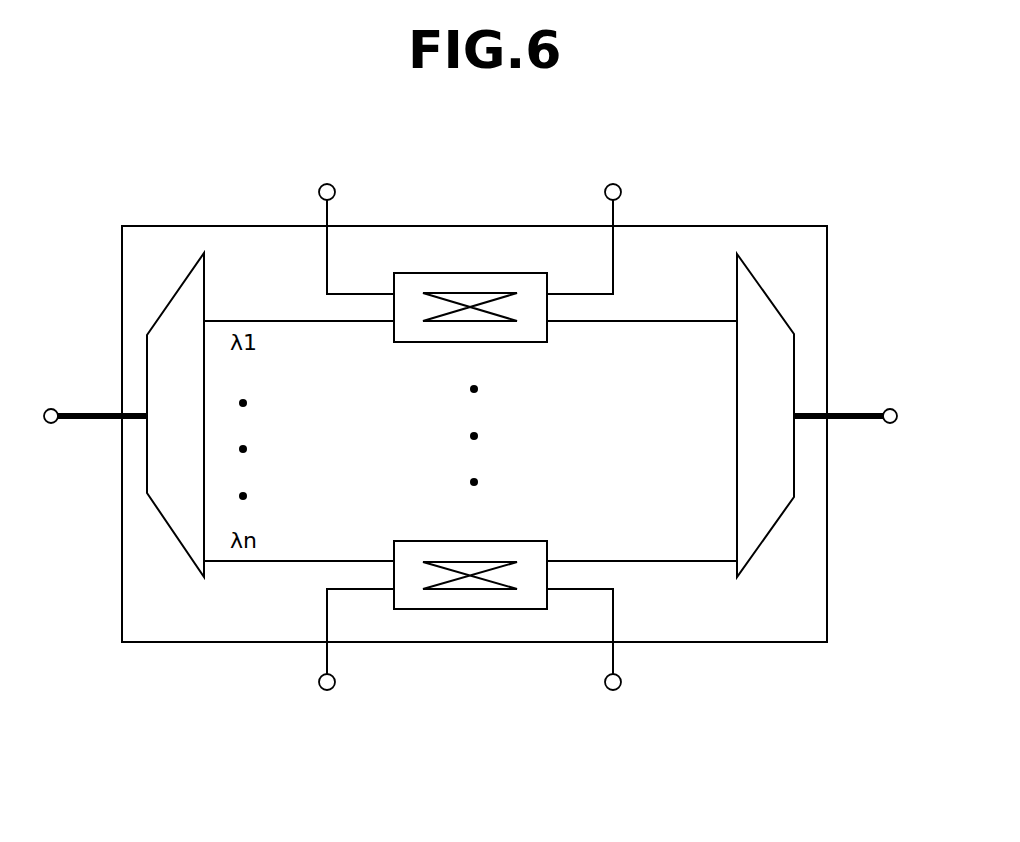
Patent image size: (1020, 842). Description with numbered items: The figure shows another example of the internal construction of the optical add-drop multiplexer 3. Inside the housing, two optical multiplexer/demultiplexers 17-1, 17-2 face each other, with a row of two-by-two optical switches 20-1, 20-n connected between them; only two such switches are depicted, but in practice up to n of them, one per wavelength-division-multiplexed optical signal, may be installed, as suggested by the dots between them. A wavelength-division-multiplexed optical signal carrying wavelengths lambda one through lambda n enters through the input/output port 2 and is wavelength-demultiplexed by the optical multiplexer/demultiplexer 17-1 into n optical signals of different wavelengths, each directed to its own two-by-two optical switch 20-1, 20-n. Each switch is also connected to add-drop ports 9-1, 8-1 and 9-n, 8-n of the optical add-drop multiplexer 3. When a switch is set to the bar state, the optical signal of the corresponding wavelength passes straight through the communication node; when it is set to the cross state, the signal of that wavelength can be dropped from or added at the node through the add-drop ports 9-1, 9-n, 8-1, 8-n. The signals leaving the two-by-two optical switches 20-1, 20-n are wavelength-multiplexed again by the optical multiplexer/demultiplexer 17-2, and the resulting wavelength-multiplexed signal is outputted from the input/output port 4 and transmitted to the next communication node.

The input/output port 2 is at (51, 409).
The optical add-drop multiplexer 3 is at (700, 226).
The input/output port 4 is at (890, 409).
The optical multiplexer/demultiplexer 17-1 is at (168, 535).
The optical multiplexer/demultiplexer 17-2 is at (770, 532).
The optical switch 20-1 is at (508, 343).
The optical switch 20-n is at (523, 516).
The add-drop port 9-1 is at (329, 184).
The add-drop port 9-n is at (325, 690).
The add-drop port 8-1 is at (615, 184).
The add-drop port 8-n is at (611, 690).